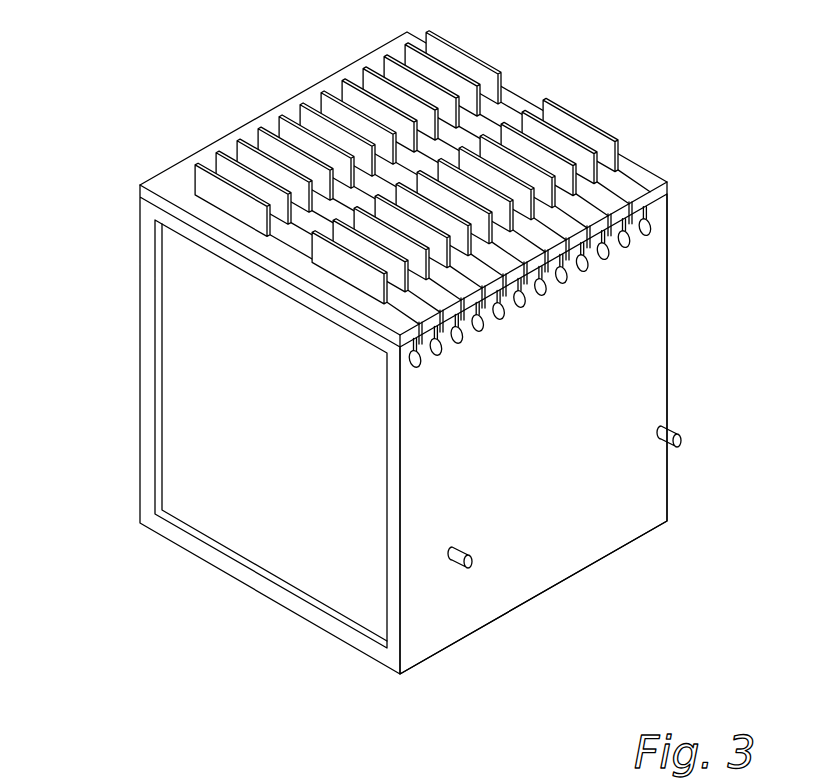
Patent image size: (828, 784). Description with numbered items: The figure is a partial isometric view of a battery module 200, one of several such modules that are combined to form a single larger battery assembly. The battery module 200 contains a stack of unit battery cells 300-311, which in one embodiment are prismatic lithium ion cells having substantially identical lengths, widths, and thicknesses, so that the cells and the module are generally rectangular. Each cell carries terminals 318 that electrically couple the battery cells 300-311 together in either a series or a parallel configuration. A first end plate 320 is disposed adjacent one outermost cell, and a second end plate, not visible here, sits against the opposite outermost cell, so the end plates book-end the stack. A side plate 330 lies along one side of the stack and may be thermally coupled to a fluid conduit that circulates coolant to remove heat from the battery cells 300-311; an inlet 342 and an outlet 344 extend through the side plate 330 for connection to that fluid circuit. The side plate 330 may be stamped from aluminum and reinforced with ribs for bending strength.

The battery module 200 is at (658, 103).
The unit battery cells 300-311 is at (162, 195).
The terminals 318 is at (327, 97).
The first end plate 320 is at (172, 303).
The side plate 330 is at (614, 502).
The inlet 342 is at (476, 577).
The outlet 344 is at (677, 439).